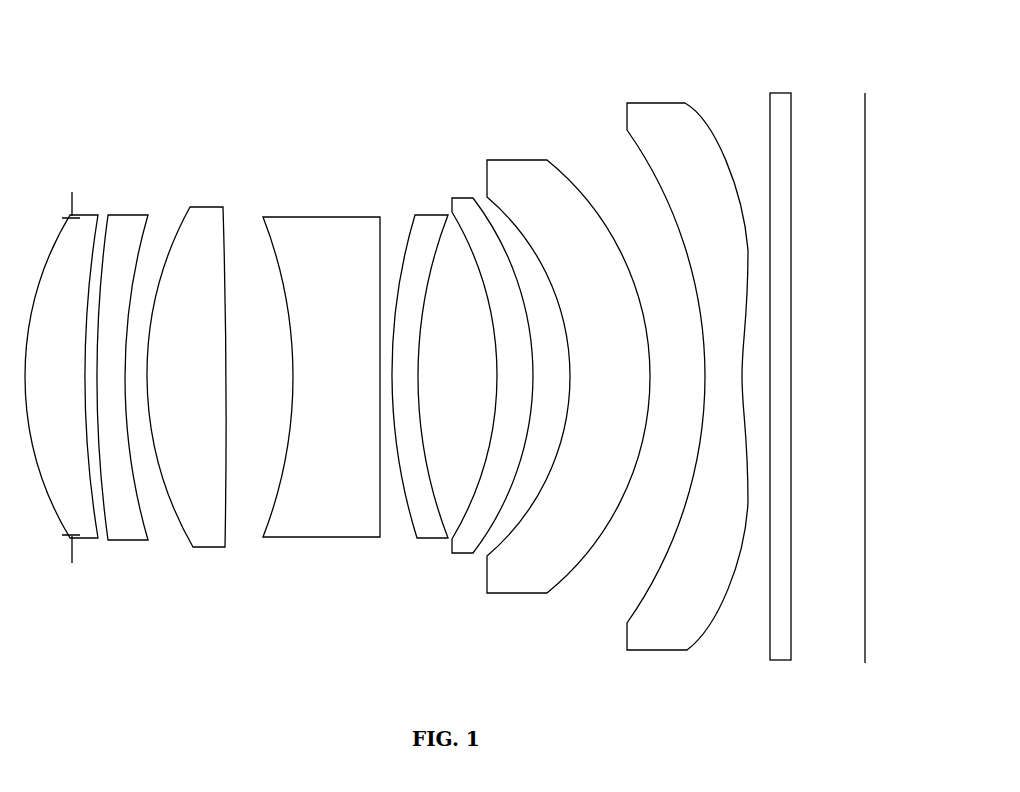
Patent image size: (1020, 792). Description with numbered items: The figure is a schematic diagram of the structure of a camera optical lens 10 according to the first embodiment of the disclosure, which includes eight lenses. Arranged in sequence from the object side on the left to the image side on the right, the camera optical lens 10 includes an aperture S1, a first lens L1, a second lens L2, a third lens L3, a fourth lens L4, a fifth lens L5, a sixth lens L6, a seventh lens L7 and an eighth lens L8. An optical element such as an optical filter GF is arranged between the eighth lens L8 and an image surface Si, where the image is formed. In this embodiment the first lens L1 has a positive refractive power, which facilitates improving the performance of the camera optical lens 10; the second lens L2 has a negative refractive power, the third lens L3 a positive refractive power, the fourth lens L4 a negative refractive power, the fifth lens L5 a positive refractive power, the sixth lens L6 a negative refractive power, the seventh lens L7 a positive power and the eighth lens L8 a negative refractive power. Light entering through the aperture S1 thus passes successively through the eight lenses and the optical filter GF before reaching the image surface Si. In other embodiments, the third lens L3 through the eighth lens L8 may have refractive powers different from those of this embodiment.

The camera optical lens 10 is at (466, 22).
The aperture S1 is at (70, 366).
The first lens L1 is at (62, 364).
The second lens L2 is at (122, 359).
The third lens L3 is at (186, 361).
The fourth lens L4 is at (321, 359).
The fifth lens L5 is at (420, 359).
The sixth lens L6 is at (492, 360).
The seventh lens L7 is at (568, 362).
The eighth lens L8 is at (687, 361).
The optical filter GF is at (780, 361).
The image surface Si is at (865, 362).